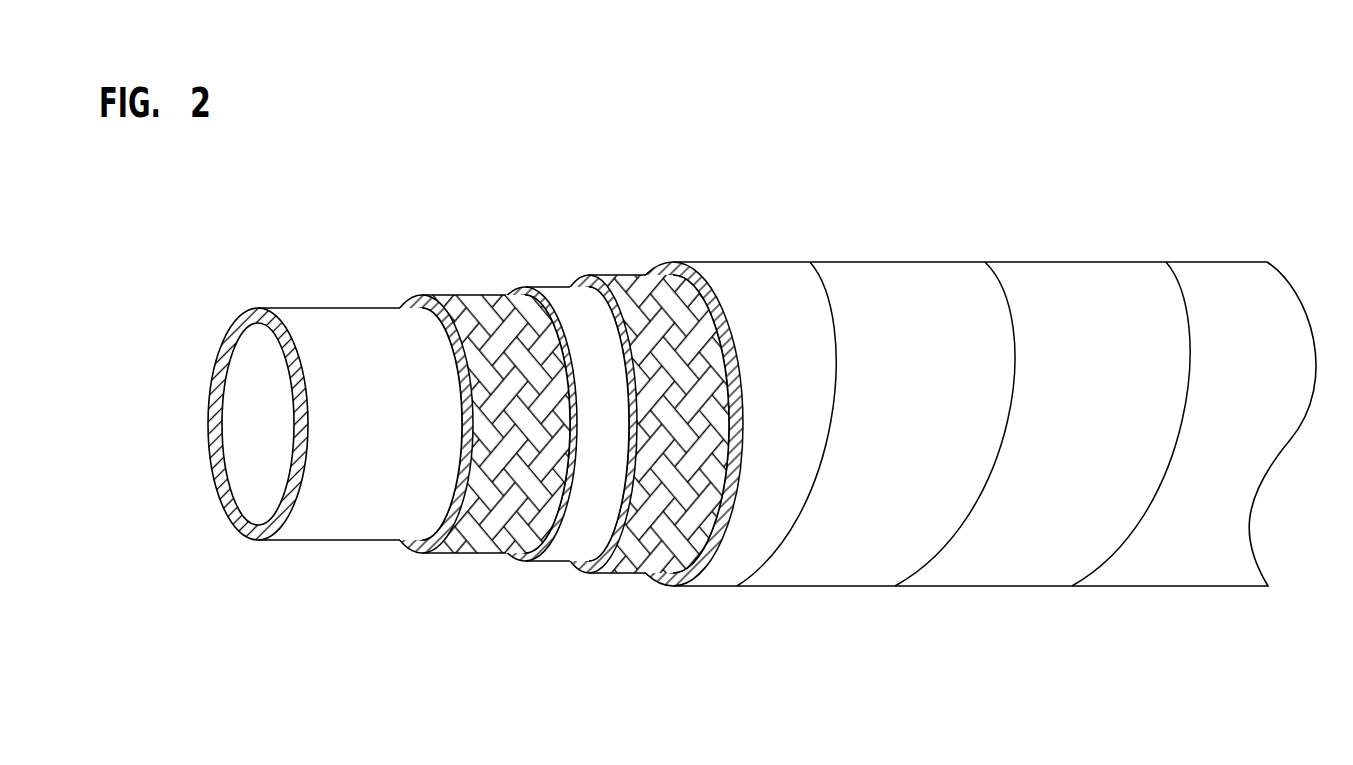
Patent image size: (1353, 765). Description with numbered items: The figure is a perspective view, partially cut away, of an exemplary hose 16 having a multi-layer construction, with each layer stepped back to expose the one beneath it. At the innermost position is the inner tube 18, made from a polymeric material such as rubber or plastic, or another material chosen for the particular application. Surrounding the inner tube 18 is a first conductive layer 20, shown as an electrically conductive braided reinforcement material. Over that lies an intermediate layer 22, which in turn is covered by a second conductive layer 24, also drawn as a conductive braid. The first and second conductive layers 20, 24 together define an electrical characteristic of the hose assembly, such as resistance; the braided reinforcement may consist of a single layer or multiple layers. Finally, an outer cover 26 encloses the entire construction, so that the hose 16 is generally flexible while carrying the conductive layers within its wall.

The hose 16 is at (762, 417).
The inner tube 18 is at (340, 308).
The first conductive layer 20 is at (472, 295).
The intermediate layer 22 is at (548, 285).
The second conductive layer 24 is at (613, 571).
The outer cover 26 is at (902, 262).